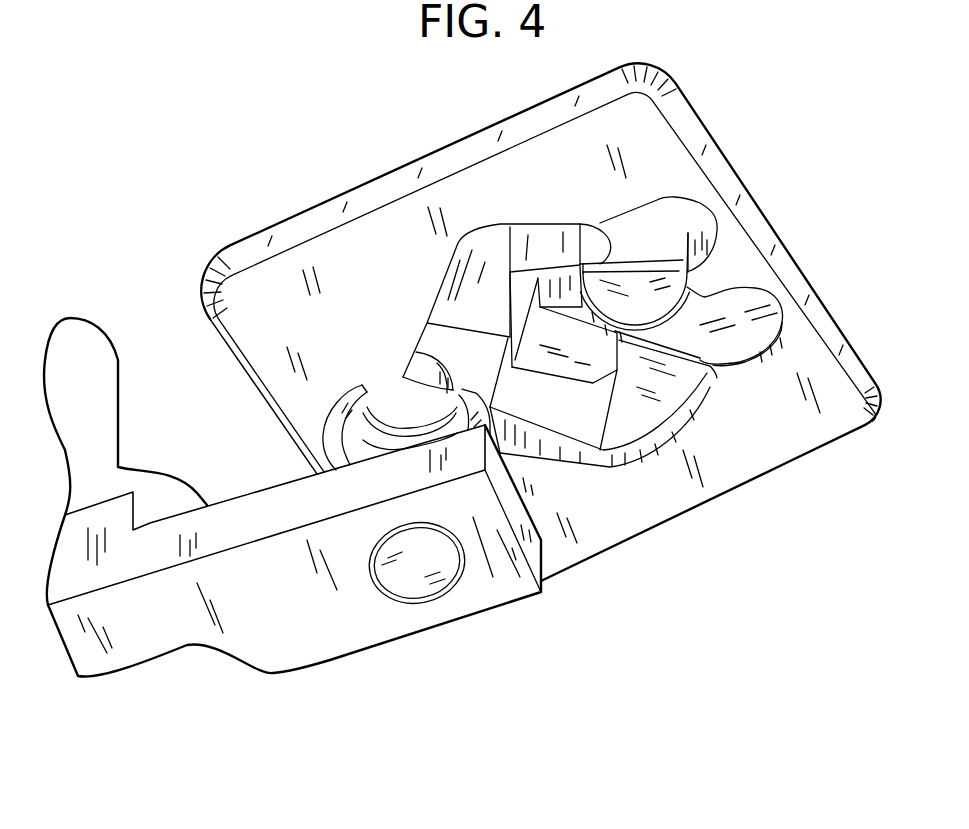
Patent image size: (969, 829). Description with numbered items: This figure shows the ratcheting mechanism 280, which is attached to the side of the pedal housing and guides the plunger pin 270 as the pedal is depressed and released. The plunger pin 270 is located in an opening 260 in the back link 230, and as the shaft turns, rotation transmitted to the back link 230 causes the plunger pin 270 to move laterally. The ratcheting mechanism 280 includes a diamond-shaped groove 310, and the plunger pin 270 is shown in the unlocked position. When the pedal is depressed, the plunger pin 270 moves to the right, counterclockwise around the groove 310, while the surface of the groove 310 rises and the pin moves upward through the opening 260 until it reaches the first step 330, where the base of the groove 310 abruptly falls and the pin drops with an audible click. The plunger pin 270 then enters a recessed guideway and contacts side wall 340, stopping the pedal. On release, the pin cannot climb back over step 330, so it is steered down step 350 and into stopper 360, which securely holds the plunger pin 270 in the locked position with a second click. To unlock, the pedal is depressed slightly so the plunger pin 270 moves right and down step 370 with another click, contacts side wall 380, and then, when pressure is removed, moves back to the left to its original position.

The back link 230 is at (235, 582).
The opening 260 is at (400, 578).
The plunger pin 270 is at (420, 380).
The ratcheting mechanism 280 is at (730, 493).
The diamond-shaped groove 310 is at (463, 303).
The first step 330 is at (708, 372).
The side wall 340 is at (788, 305).
The step 350 is at (733, 255).
The stopper 360 is at (570, 360).
The step 370 is at (607, 267).
The side wall 380 is at (658, 145).